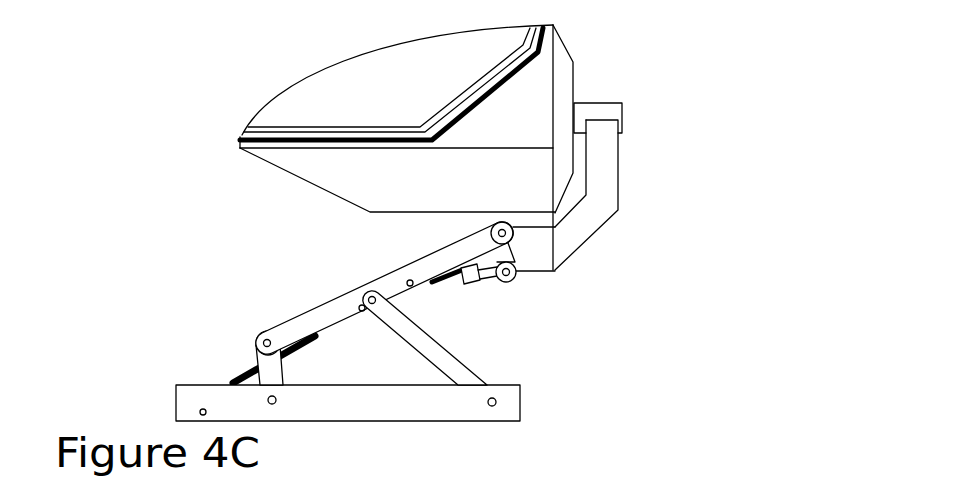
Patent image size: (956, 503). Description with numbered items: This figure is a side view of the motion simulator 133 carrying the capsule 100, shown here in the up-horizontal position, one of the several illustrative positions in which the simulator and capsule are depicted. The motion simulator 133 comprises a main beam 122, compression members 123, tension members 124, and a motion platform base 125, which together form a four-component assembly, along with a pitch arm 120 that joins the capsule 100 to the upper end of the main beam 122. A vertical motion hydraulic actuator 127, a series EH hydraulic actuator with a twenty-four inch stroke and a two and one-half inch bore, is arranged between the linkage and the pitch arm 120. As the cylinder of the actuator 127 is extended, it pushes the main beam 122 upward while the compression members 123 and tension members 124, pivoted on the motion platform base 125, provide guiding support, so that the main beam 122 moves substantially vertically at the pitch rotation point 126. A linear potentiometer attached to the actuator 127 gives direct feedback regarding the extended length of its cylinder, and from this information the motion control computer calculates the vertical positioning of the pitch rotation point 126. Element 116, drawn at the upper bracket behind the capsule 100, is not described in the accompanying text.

The capsule 100 is at (262, 104).
The upper mounting bracket 116 is at (596, 102).
The pitch arm 120 is at (620, 153).
The main beam 122 is at (326, 308).
The compression members 123 is at (408, 330).
The tension members 124 is at (253, 350).
The motion platform base 125 is at (175, 405).
The pitch rotation point 126 is at (493, 229).
The hydraulic actuator 127 is at (283, 372).
The motion simulator 133 is at (297, 308).